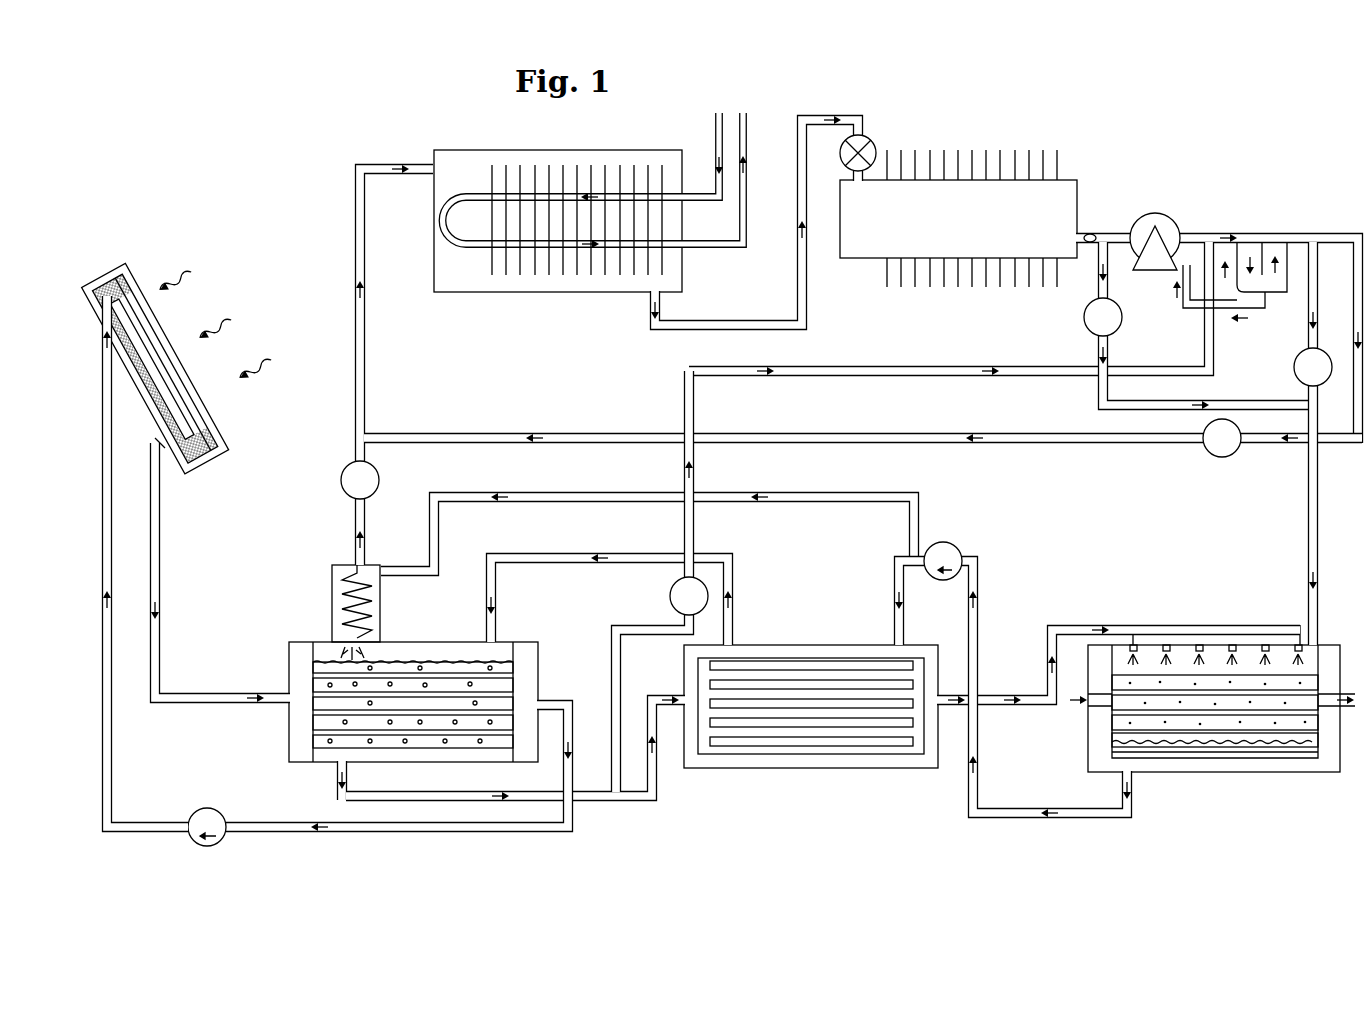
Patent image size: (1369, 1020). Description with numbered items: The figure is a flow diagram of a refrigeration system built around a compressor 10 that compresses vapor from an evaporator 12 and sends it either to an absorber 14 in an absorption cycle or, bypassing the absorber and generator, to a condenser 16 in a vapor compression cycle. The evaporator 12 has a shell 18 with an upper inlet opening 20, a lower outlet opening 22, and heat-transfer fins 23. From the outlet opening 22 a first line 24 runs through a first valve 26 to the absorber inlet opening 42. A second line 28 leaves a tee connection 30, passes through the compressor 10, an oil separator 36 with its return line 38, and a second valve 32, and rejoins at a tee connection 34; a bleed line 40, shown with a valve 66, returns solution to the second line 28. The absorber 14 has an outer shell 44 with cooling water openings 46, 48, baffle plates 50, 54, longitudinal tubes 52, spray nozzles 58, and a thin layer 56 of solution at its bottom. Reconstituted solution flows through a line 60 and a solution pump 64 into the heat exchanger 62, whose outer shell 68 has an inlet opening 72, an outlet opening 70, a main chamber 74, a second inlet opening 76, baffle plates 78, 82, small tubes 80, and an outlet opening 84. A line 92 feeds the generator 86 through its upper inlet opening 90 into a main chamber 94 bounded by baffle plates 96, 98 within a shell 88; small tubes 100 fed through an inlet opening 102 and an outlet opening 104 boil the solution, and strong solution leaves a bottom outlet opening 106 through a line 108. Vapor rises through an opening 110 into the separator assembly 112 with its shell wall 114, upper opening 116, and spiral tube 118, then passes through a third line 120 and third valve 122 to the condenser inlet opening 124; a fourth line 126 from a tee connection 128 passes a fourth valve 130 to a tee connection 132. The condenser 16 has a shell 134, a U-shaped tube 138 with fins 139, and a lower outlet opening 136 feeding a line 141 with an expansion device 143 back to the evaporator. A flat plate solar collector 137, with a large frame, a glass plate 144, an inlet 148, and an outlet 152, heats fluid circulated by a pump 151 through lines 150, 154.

The compressor 10 is at (1167, 215).
The evaporator 12 is at (1068, 150).
The absorber 14 is at (1322, 632).
The condenser 16 is at (597, 145).
The shell 18 is at (1080, 200).
The upper inlet opening 20 is at (855, 184).
The lower outlet opening 22 is at (1080, 246).
The fins 23 is at (970, 152).
The first line 24 is at (1108, 298).
The first valve 26 is at (1115, 328).
The second line 28 is at (1202, 232).
The tee connection 30 is at (1094, 233).
The second valve 32 is at (1294, 371).
The tee connection 34 is at (1318, 402).
The oil separator 36 is at (1262, 240).
The return line 38 is at (1266, 312).
The bleed line 40 is at (848, 366).
The upper inlet opening 42 is at (1305, 630).
The outer shell 44 is at (1258, 773).
The inlet opening 46 is at (1082, 698).
The outlet opening 48 is at (1346, 712).
The baffle plate 50 is at (1112, 770).
The longitudinal tubes 52 is at (1246, 742).
The second baffle plate 54 is at (1330, 770).
The thin layer of solution 56 is at (1182, 624).
The spray nozzles 58 is at (1230, 642).
The line 60 is at (1018, 820).
The heat exchanger 62 is at (818, 780).
The solution pump 64 is at (950, 544).
The valve conduit 66 is at (694, 558).
The outer shell 68 is at (860, 768).
The outlet opening 70 is at (735, 643).
The inlet opening 72 is at (892, 643).
The main chamber 74 is at (808, 660).
The second inlet opening 76 is at (683, 697).
The baffle plate 78 is at (700, 760).
The small longitudinal tubes 80 is at (760, 745).
The second baffle plate 82 is at (914, 752).
The outlet opening 84 is at (936, 697).
The generator 86 is at (1006, 697).
The outer shell 88 is at (538, 662).
The upper inlet opening 90 is at (482, 640).
The line 92 is at (543, 553).
The main chamber 94 is at (430, 660).
The baffle plate 96 is at (305, 772).
The baffle plate 98 is at (524, 766).
The small tubes 100 is at (432, 752).
The inlet opening 102 is at (286, 694).
The outlet opening 104 is at (542, 703).
The bottom outlet opening 106 is at (348, 772).
The line 108 is at (631, 802).
The opening 110 is at (332, 645).
The separator assembly 112 is at (330, 590).
The shell wall 114 is at (382, 616).
The upper opening 116 is at (364, 560).
The small tube 118 is at (556, 494).
The third line 120 is at (365, 372).
The third valve 122 is at (380, 478).
The inlet opening 124 is at (432, 160).
The fourth line 126 is at (437, 432).
The tee connection 128 is at (1310, 232).
The fourth valve 130 is at (1233, 456).
The tee connection 132 is at (364, 430).
The shell 134 is at (518, 150).
The lower outlet opening 136 is at (647, 300).
The solar collector 137 is at (178, 352).
The U-shaped tube 138 is at (466, 196).
The fins 139 is at (642, 165).
The line 141 is at (780, 220).
The expansion device 143 is at (866, 140).
The glass plate 144 is at (190, 368).
The heat transfer fluid inlet 148 is at (106, 320).
The line 150 is at (112, 515).
The pump 151 is at (213, 808).
The heat transfer fluid outlet 152 is at (158, 446).
The line 154 is at (158, 592).